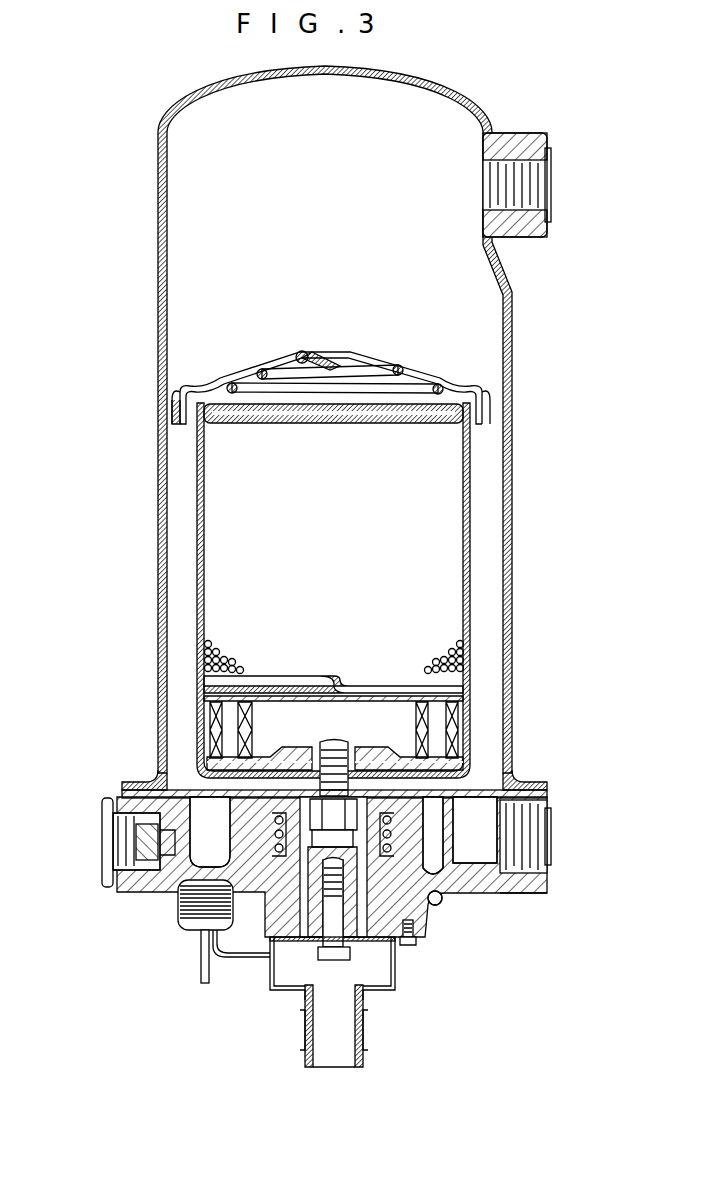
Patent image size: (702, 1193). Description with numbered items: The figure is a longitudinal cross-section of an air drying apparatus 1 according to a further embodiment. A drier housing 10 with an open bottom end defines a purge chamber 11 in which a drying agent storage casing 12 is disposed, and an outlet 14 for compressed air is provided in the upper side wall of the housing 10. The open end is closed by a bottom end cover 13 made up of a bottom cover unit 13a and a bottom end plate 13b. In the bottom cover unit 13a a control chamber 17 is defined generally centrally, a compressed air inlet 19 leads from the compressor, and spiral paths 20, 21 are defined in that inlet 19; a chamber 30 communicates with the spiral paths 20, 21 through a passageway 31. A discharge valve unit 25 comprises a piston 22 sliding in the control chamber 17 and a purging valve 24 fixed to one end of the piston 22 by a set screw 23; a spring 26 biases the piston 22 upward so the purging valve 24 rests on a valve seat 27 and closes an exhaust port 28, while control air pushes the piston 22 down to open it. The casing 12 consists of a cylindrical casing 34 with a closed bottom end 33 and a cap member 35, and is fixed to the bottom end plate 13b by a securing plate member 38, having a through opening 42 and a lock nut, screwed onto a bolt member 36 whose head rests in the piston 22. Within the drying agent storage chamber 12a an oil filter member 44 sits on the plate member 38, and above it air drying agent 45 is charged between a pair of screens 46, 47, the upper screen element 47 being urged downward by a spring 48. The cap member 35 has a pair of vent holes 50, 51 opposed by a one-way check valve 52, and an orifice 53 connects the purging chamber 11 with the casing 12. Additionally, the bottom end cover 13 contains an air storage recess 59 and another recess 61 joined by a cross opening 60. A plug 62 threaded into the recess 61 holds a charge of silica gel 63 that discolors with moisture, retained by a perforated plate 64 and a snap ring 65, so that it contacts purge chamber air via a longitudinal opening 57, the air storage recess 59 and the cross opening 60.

The air drying apparatus 1 is at (478, 92).
The drier housing 10 is at (158, 322).
The purge chamber 11 is at (178, 234).
The drying agent storage casing 12 is at (474, 551).
The drying agent storage chamber 12a is at (450, 500).
The bottom end cover 13 is at (460, 920).
The bottom cover unit 13a is at (546, 891).
The bottom end plate 13b is at (547, 791).
The outlet 14 is at (536, 196).
The control chamber 17 is at (370, 804).
The compressed air inlet 19 is at (532, 862).
The spiral path 20 is at (478, 840).
The spiral path 21 is at (436, 856).
The piston 22 is at (300, 906).
The set screw 23 is at (345, 960).
The purging valve 24 is at (322, 950).
The discharge valve unit 25 is at (250, 957).
The spring 26 is at (210, 832).
The valve seat 27 is at (408, 945).
The exhaust port 28 is at (302, 1022).
The chamber 30 is at (392, 960).
The passageway 31 is at (438, 906).
The closed bottom end 33 is at (228, 756).
The cylindrical casing 34 is at (478, 516).
The cap member 35 is at (428, 366).
The bolt member 36 is at (334, 742).
The securing plate member 38 is at (462, 772).
The through opening 42 is at (290, 758).
The oil filter member 44 is at (462, 703).
The air drying agent 45 is at (462, 640).
The screen 46 is at (476, 682).
The upper screen element 47 is at (440, 420).
The spring 48 is at (260, 368).
The vent hole 50 is at (360, 354).
The vent hole 51 is at (304, 352).
The one-way check valve 52 is at (334, 354).
The orifice 53 is at (212, 386).
The longitudinal opening 57 is at (200, 792).
The air storage recess 59 is at (156, 790).
The cross opening 60 is at (186, 803).
The recess 61 is at (178, 904).
The plug 62 is at (106, 798).
The silica gel 63 is at (114, 836).
The perforated plate 64 is at (134, 852).
The snap ring 65 is at (150, 888).